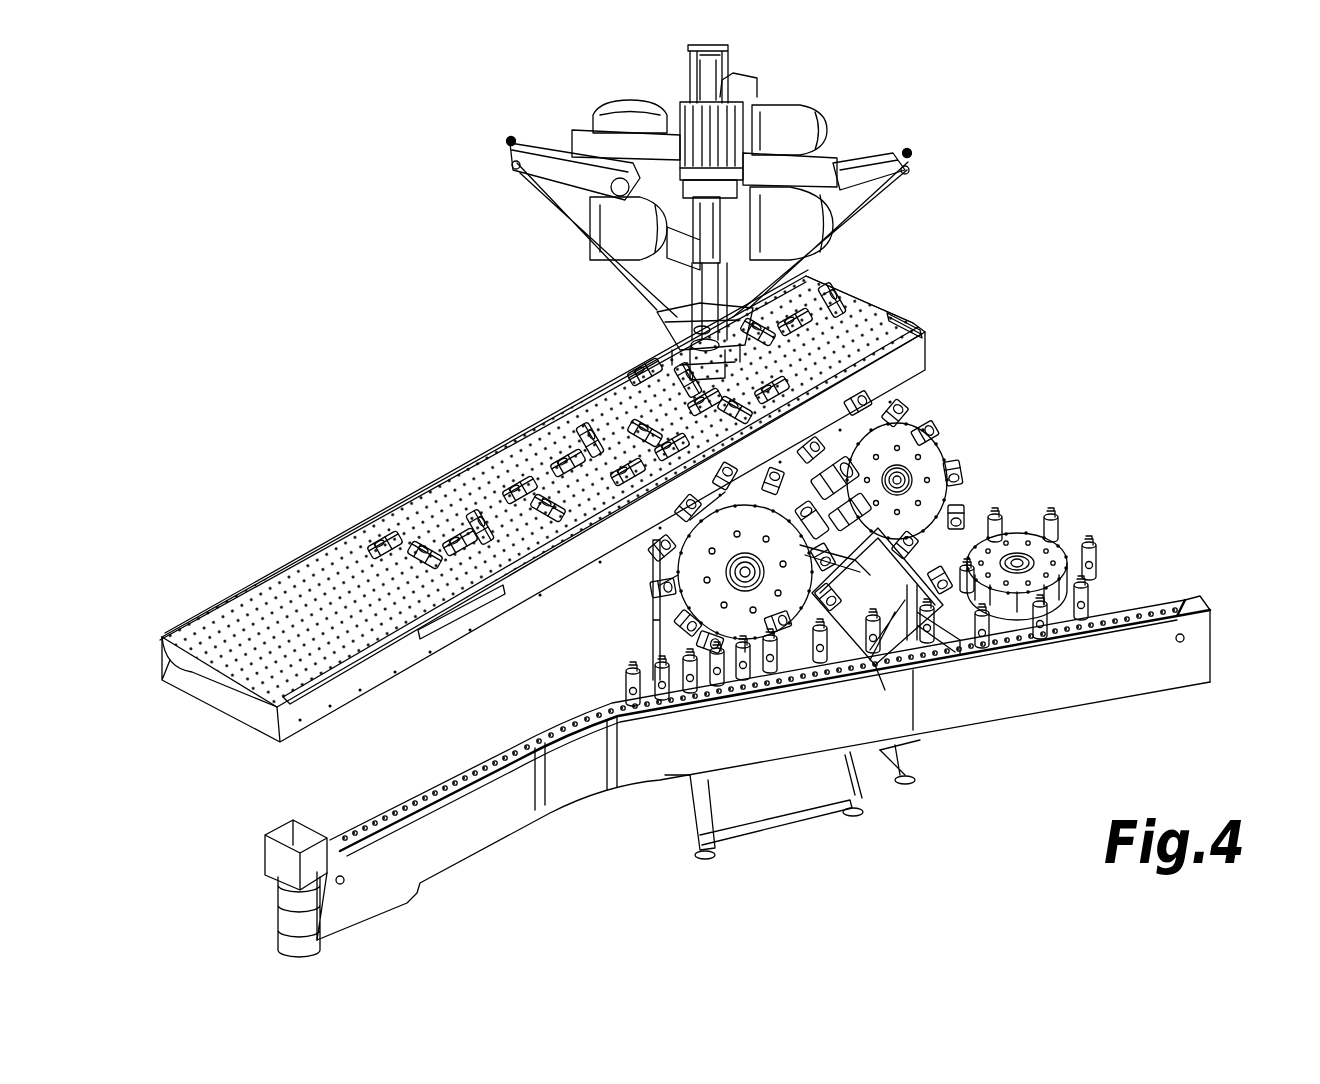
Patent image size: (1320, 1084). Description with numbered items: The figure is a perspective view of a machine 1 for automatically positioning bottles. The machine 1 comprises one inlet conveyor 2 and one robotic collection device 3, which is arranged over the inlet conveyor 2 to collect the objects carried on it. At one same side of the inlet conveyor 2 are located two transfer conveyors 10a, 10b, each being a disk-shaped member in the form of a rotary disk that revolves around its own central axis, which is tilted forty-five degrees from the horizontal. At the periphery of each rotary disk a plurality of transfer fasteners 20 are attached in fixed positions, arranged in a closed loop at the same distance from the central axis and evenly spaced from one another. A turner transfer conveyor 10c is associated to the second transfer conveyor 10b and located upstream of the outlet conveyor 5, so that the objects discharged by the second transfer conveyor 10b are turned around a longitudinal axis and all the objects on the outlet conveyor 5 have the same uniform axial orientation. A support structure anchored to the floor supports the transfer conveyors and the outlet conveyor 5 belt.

The machine 1 is at (345, 325).
The inlet conveyor 2 is at (308, 557).
The robotic collection device 3 is at (830, 130).
The outlet conveyor 5 is at (417, 800).
The first transfer conveyor 10a is at (703, 603).
The second transfer conveyor 10b is at (923, 463).
The turner transfer conveyor 10c is at (1023, 537).
The transfer fasteners 20 is at (907, 418).